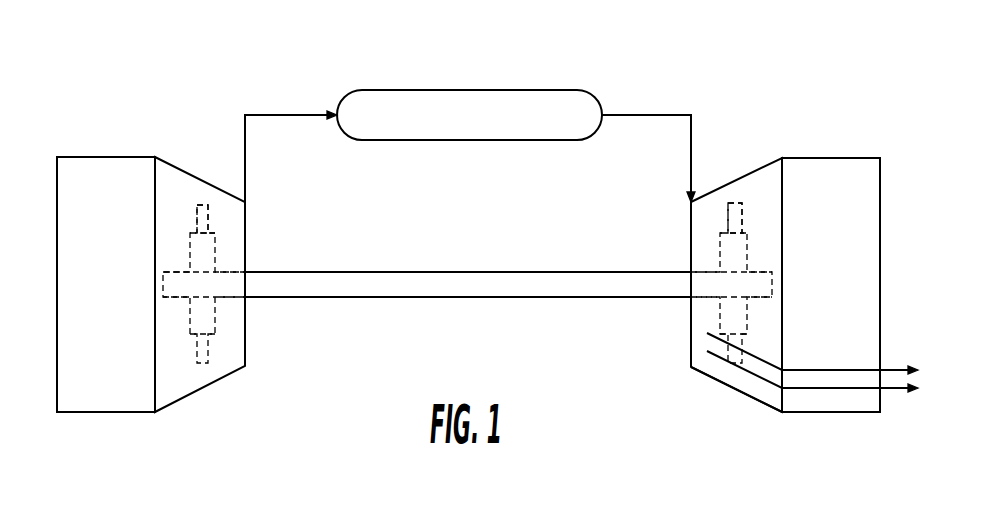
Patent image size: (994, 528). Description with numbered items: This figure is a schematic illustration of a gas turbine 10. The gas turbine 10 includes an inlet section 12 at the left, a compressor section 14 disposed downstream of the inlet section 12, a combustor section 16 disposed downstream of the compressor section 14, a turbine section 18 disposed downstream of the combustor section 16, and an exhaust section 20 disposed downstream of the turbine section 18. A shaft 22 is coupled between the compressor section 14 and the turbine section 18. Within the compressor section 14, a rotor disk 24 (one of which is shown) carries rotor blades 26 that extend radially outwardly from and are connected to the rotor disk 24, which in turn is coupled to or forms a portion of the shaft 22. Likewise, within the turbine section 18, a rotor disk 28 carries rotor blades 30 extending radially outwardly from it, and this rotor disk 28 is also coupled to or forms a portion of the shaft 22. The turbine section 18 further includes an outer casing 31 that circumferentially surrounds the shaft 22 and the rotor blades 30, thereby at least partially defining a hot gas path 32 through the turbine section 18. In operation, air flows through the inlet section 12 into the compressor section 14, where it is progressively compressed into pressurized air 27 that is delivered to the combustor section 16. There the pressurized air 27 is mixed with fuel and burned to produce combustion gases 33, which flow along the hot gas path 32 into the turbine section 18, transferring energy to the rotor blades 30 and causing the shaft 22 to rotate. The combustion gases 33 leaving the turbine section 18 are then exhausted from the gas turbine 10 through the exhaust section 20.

The gas turbine 10 is at (280, 35).
The inlet section 12 is at (87, 157).
The compressor section 14 is at (192, 173).
The combustor section 16 is at (538, 90).
The turbine section 18 is at (760, 168).
The exhaust section 20 is at (840, 158).
The shaft 22 is at (402, 297).
The rotor disk 24 is at (190, 247).
The rotor blade 26 is at (197, 218).
The pressurized air 27 is at (270, 115).
The rotor disk 28 is at (720, 247).
The rotor blade 30 is at (733, 203).
The outer casing 31 is at (770, 408).
The hot gas path 32 is at (737, 386).
The combustion gases 33 is at (655, 115).